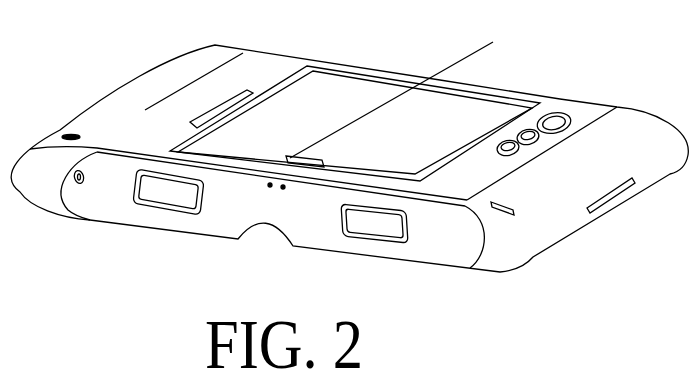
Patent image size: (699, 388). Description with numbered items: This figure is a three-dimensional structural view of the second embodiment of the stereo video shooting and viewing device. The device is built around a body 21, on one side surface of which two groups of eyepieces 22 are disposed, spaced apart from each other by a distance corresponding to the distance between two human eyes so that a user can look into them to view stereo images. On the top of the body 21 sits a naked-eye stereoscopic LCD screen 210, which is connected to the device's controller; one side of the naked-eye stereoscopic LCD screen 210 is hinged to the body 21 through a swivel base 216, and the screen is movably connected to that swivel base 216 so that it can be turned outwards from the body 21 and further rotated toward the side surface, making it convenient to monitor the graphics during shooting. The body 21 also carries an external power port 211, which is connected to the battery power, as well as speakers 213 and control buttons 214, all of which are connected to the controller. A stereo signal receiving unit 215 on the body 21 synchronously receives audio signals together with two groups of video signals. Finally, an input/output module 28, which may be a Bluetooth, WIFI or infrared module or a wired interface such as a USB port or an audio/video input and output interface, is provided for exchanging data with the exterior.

The body 21 is at (262, 62).
The naked-eye stereoscopic LCD screen 210 is at (460, 95).
The external power port 211 is at (77, 185).
The speakers 213 is at (70, 134).
The control buttons 214 is at (590, 80).
The stereo signal receiving unit 215 is at (502, 201).
The swivel base 216 is at (292, 155).
The eyepieces 22 is at (157, 200).
The input/output module 28 is at (613, 192).